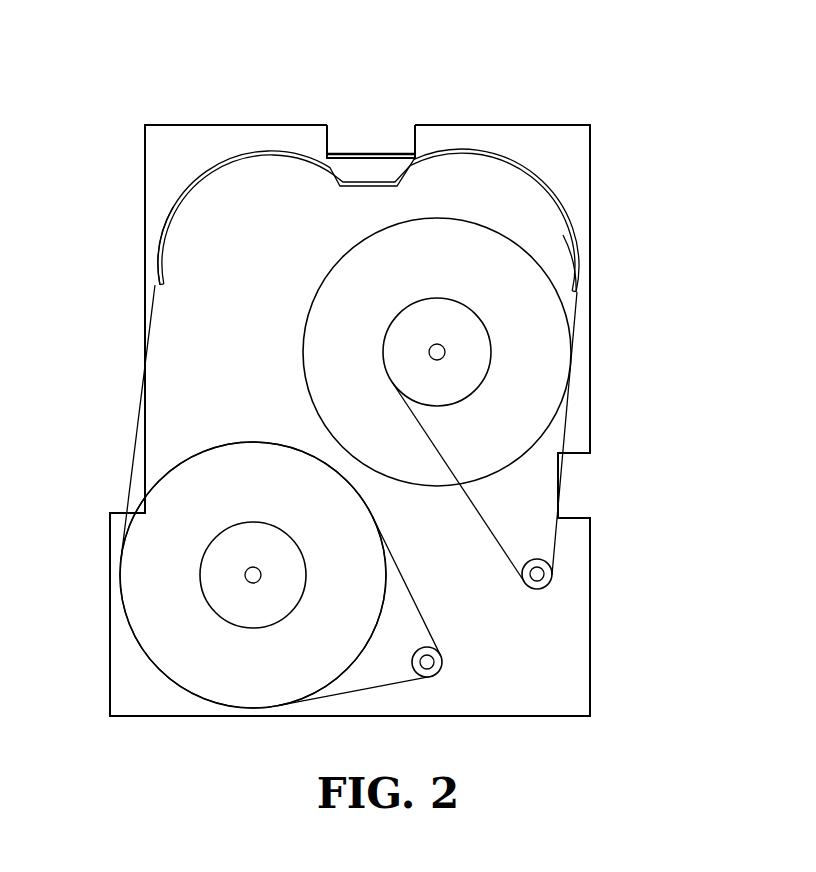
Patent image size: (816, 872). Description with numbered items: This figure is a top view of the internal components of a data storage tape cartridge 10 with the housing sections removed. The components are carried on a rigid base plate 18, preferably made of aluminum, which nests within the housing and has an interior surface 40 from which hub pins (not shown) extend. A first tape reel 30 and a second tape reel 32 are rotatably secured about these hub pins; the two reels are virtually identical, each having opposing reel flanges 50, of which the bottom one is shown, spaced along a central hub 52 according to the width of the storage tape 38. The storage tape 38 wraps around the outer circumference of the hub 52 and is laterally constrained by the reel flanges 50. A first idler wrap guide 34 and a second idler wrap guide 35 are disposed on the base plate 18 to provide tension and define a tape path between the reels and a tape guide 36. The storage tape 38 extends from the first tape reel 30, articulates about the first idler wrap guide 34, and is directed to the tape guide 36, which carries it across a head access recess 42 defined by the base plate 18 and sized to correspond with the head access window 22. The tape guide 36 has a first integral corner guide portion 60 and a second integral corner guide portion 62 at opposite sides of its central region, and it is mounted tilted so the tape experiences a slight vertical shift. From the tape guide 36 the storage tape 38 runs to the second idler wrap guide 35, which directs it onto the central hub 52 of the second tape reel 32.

The data storage tape cartridge 10 is at (590, 64).
The base plate 18 is at (590, 643).
The head access window 22 is at (379, 93).
The first tape reel 30 is at (573, 376).
The second tape reel 32 is at (135, 593).
The first idler wrap guide 34 is at (538, 590).
The second idler wrap guide 35 is at (441, 668).
The tape guide 36 is at (522, 156).
The storage tape 38 is at (350, 148).
The interior surface 40 is at (168, 371).
The head access recess 42 is at (393, 155).
The reel flanges 50 is at (326, 332).
The central hub 52 is at (473, 378).
The first integral corner guide portion 60 is at (590, 271).
The second integral corner guide portion 62 is at (158, 255).